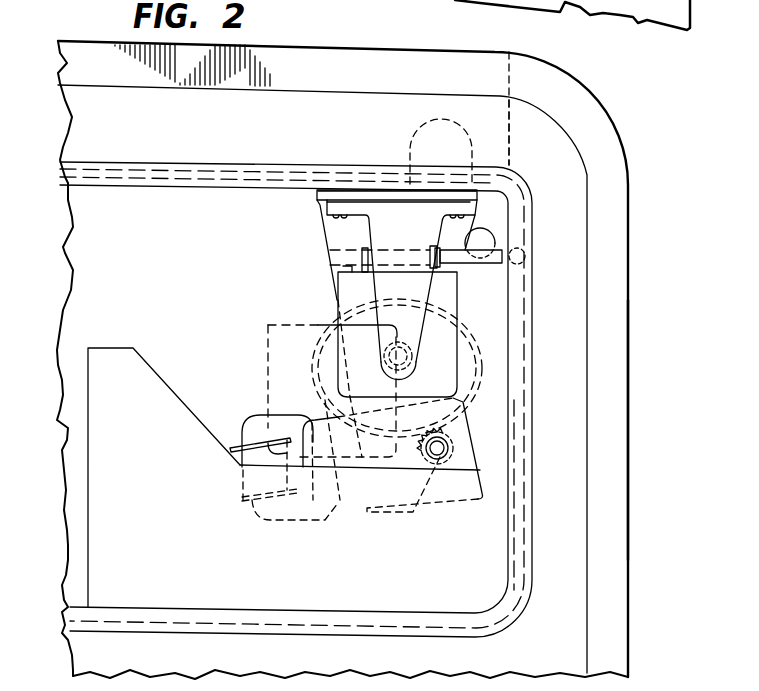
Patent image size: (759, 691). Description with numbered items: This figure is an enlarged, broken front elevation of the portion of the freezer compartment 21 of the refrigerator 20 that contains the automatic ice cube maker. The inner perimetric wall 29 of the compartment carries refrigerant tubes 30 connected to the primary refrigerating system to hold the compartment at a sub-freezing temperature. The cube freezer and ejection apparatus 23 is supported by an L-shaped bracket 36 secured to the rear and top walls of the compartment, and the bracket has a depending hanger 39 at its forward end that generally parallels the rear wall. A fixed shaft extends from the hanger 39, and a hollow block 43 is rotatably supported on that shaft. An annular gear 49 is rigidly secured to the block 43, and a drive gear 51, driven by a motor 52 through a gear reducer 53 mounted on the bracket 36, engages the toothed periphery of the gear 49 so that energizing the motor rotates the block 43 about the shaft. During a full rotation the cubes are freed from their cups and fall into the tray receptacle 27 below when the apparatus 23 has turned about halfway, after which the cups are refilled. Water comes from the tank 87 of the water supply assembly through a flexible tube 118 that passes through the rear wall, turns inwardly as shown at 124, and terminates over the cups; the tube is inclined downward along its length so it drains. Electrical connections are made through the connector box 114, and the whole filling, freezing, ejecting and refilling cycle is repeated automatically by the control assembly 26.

The refrigerator 20 is at (629, 518).
The freezer compartment 21 is at (90, 257).
The cube freezer and ejection apparatus 23 is at (344, 234).
The control assembly 26 is at (258, 414).
The tray receptacle 27 is at (110, 436).
The inner perimetric wall 29 is at (158, 183).
The refrigerant tubes 30 is at (238, 170).
The bracket 36 is at (376, 192).
The hanger 39 is at (383, 293).
The block 43 is at (447, 340).
The annular gear 49 is at (482, 374).
The drive gear 51 is at (455, 442).
The motor 52 is at (247, 432).
The gear reducer 53 is at (470, 460).
The tank 87 is at (509, 157).
The connector box 114 is at (268, 325).
The flexible tube 118 is at (497, 240).
The inward turn of the tube 124 is at (455, 258).